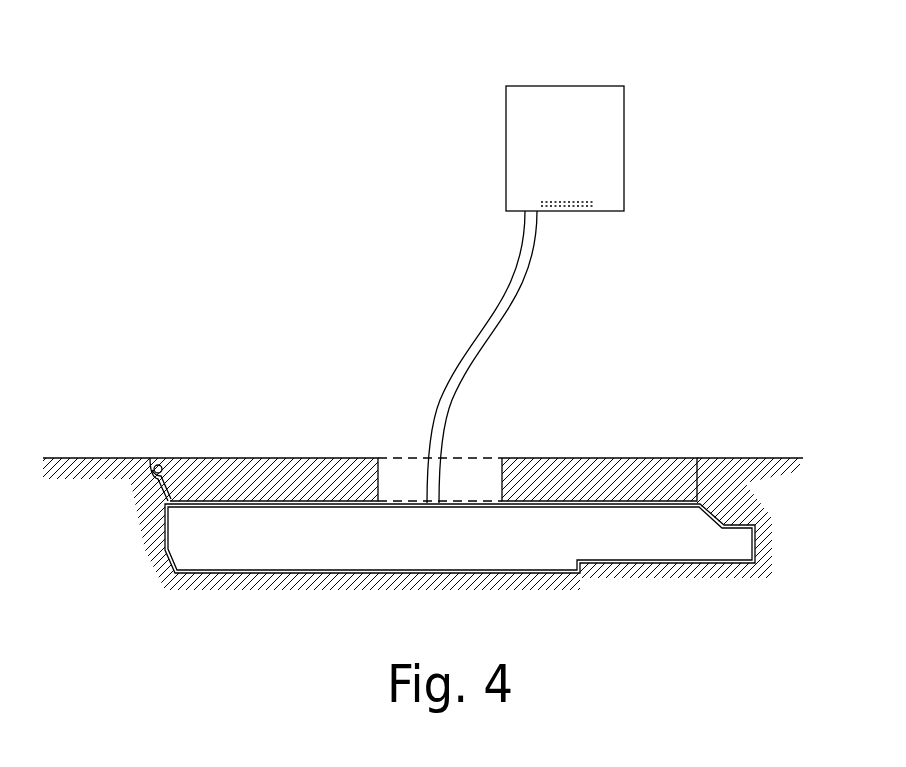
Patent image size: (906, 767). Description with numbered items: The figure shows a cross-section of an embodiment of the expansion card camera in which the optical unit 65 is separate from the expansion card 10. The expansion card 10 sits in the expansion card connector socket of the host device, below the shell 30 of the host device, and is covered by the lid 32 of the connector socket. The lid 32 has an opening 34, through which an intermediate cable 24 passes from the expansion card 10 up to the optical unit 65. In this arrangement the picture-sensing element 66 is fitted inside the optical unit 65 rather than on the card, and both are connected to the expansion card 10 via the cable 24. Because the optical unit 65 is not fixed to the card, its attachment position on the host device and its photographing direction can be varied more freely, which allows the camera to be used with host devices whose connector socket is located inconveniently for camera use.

The expansion card 10 is at (645, 575).
The cable 24 is at (464, 365).
The shell 30 is at (773, 458).
The lid 32 is at (633, 458).
The opening 34 is at (478, 458).
The optical unit 65 is at (617, 83).
The picture-sensing element 66 is at (585, 196).